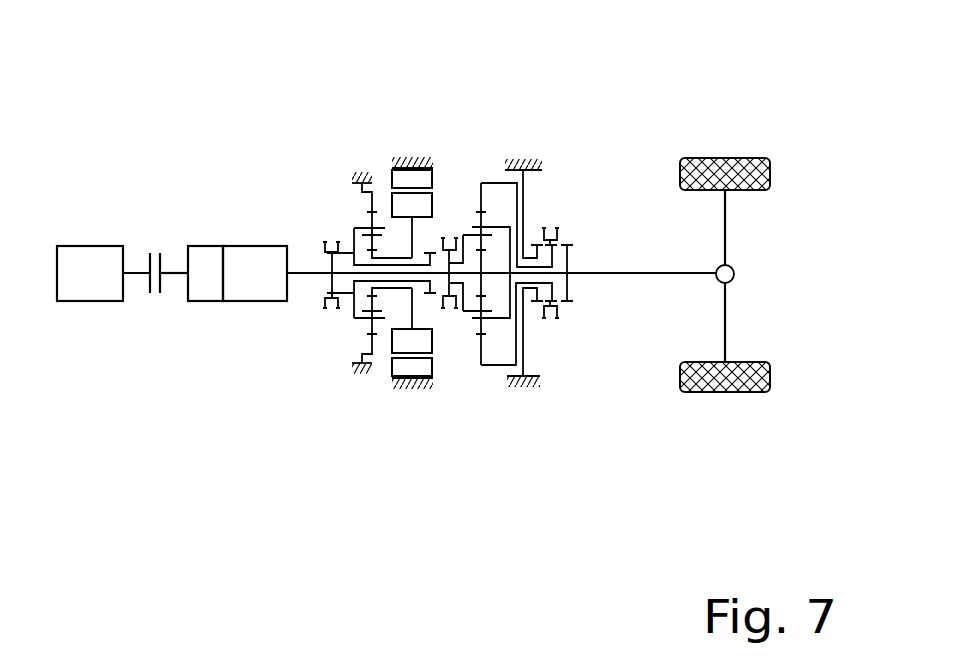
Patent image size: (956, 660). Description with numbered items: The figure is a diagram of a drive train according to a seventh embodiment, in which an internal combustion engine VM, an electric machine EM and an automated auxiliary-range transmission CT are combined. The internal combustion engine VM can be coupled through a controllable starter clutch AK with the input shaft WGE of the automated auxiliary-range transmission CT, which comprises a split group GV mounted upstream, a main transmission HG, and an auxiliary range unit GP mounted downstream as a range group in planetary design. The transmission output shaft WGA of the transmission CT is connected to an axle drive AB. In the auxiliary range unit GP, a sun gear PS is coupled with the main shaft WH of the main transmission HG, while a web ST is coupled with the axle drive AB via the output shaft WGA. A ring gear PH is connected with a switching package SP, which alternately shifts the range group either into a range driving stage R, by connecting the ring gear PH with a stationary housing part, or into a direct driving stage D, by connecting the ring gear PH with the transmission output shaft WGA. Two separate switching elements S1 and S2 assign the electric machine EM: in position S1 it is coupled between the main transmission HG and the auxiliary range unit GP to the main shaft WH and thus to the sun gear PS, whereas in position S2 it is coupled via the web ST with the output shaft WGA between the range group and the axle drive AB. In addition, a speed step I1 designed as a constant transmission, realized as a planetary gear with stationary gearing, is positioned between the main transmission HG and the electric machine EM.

The internal combustion engine VM is at (77, 245).
The controllable starter clutch AK is at (155, 250).
The main shaft WH is at (305, 272).
The speed step I1 is at (363, 171).
The electric machine EM is at (395, 156).
The ring gear PH is at (502, 183).
The web ST is at (498, 232).
The axle drive AB is at (725, 158).
The switching element S1 is at (338, 259).
The switching element S2 is at (451, 261).
The range driving stage R is at (544, 221).
The direct driving stage D is at (557, 258).
The switching package SP is at (570, 320).
The auxiliary range unit GP is at (590, 443).
The sun gear PS is at (480, 297).
The split group GV is at (207, 302).
The main transmission HG is at (257, 302).
The input shaft WGE is at (175, 277).
The transmission output shaft WGA is at (638, 274).
The automated auxiliary-range transmission CT is at (590, 537).